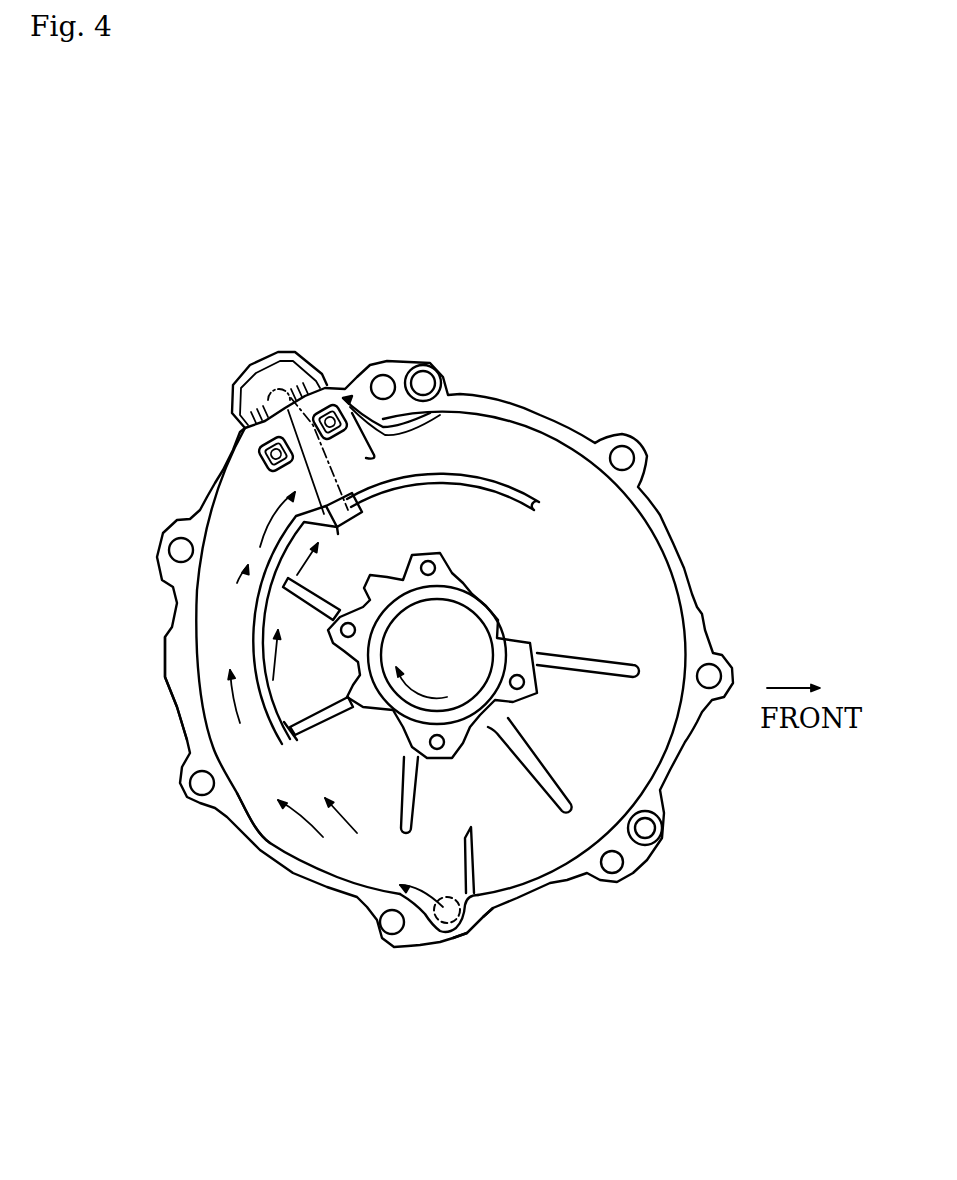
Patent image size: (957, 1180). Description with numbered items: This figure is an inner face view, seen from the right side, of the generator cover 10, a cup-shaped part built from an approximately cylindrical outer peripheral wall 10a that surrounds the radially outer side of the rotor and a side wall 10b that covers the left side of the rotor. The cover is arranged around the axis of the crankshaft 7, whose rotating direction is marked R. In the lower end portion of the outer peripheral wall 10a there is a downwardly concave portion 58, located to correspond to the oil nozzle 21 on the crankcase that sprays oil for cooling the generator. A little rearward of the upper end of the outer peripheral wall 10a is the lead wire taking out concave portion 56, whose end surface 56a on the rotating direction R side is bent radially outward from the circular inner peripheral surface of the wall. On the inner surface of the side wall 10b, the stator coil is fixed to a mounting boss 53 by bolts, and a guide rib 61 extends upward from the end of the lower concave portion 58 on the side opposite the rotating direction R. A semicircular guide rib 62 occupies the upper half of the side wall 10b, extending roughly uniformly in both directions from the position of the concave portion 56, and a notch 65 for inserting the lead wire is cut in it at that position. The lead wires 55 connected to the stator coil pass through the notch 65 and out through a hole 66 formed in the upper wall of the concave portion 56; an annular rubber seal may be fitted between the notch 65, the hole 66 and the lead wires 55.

The generator cover 10 is at (104, 628).
The outer peripheral wall 10a is at (187, 735).
The side wall 10b is at (268, 788).
The crankshaft 7 is at (468, 623).
The oil nozzle 21 is at (443, 932).
The mounting boss 53 is at (500, 700).
The lead wires 55 is at (223, 460).
The lead wire taking out concave portion 56 is at (258, 446).
The end surface 56a is at (307, 478).
The concave portion 58 is at (463, 937).
The guide rib 61 is at (476, 864).
The semicircular guide rib 62 is at (253, 648).
The notch 65 is at (362, 502).
The hole 66 is at (257, 403).